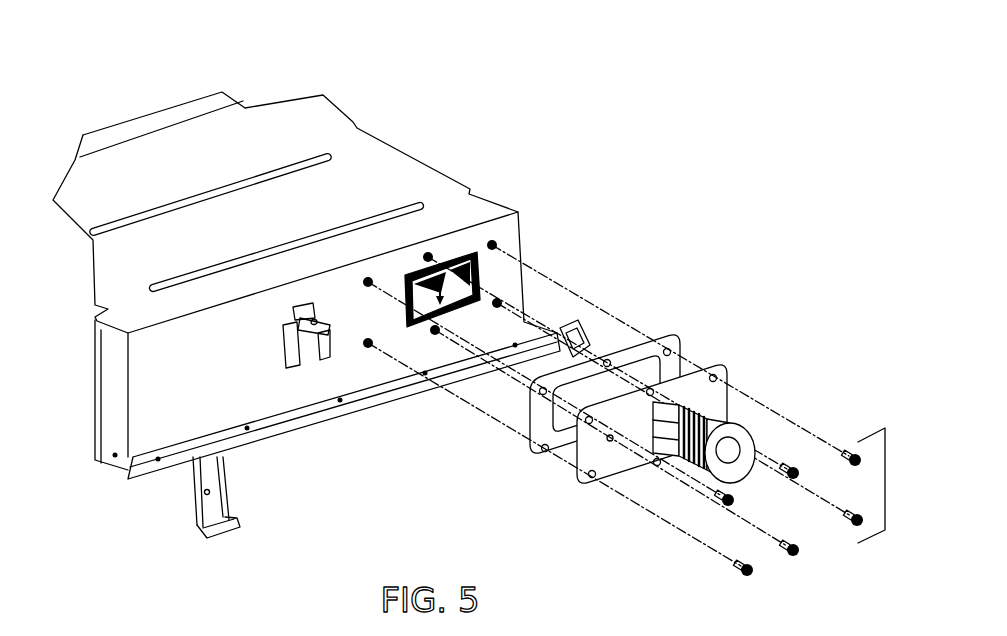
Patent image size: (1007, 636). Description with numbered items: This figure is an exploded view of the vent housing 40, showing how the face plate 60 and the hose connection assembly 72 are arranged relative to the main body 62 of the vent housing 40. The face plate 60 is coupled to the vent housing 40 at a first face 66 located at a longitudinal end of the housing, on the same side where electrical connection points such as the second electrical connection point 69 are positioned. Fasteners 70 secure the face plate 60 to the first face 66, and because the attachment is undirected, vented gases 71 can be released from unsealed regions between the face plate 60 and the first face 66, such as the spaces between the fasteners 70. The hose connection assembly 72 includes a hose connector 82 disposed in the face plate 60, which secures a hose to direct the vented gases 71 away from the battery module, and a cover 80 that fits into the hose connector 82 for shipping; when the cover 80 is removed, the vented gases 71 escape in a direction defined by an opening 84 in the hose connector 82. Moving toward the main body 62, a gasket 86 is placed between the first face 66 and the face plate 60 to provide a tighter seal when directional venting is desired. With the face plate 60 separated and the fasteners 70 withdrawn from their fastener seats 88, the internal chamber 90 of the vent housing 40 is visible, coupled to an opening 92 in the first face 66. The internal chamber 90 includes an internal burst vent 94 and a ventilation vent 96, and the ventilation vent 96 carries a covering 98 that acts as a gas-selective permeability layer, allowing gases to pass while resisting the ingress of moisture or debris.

The vent housing 40 is at (304, 299).
The main body 62 is at (233, 224).
The first face 66 is at (173, 410).
The second electrical connection point 69 is at (296, 338).
The fasteners 70 is at (888, 482).
The vented gases 71 is at (541, 273).
The hose connection assembly 72 is at (739, 450).
The cover 80 is at (745, 443).
The hose connector 82 is at (738, 392).
The opening 84 is at (690, 466).
The gasket 86 is at (673, 340).
The fastener seats 88 is at (362, 284).
The internal chamber 90 is at (401, 264).
The opening 92 is at (503, 327).
The internal burst vent 94 is at (415, 266).
The ventilation vent 96 is at (477, 262).
The covering 98 is at (582, 324).
The face plate 60 is at (592, 488).